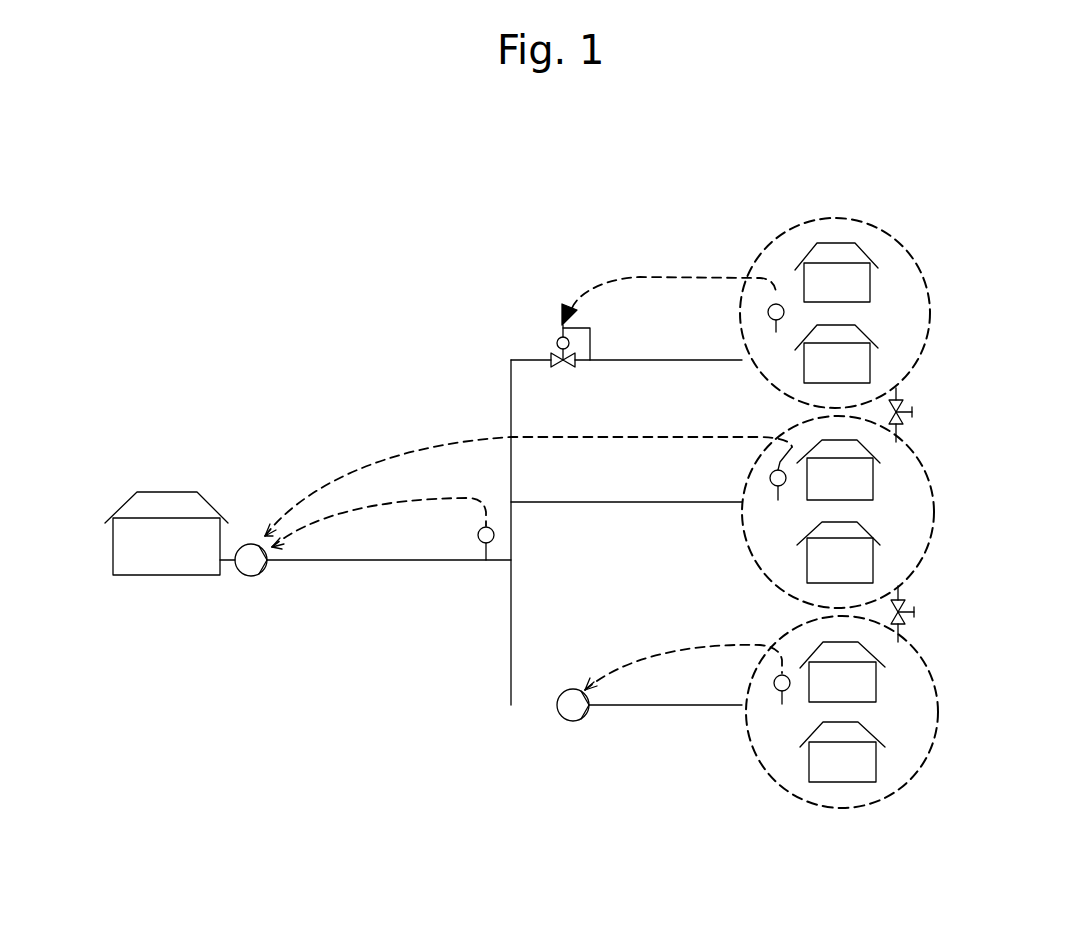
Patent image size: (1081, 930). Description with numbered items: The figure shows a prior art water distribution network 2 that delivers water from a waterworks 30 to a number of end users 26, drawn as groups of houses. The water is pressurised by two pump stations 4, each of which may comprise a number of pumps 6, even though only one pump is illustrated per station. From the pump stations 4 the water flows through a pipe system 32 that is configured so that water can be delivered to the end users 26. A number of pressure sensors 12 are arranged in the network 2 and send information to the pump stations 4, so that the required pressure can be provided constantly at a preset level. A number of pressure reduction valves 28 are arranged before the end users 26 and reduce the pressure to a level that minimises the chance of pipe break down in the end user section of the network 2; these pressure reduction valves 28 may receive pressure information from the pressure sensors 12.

The water distribution network 2 is at (447, 392).
The pump station 4 is at (240, 575).
The pump 6 is at (553, 713).
The pressure sensor 12 is at (776, 302).
The end user 26 is at (878, 683).
The pressure reduction valve 28 is at (558, 340).
The waterworks 30 is at (160, 500).
The pipe system 32 is at (511, 626).